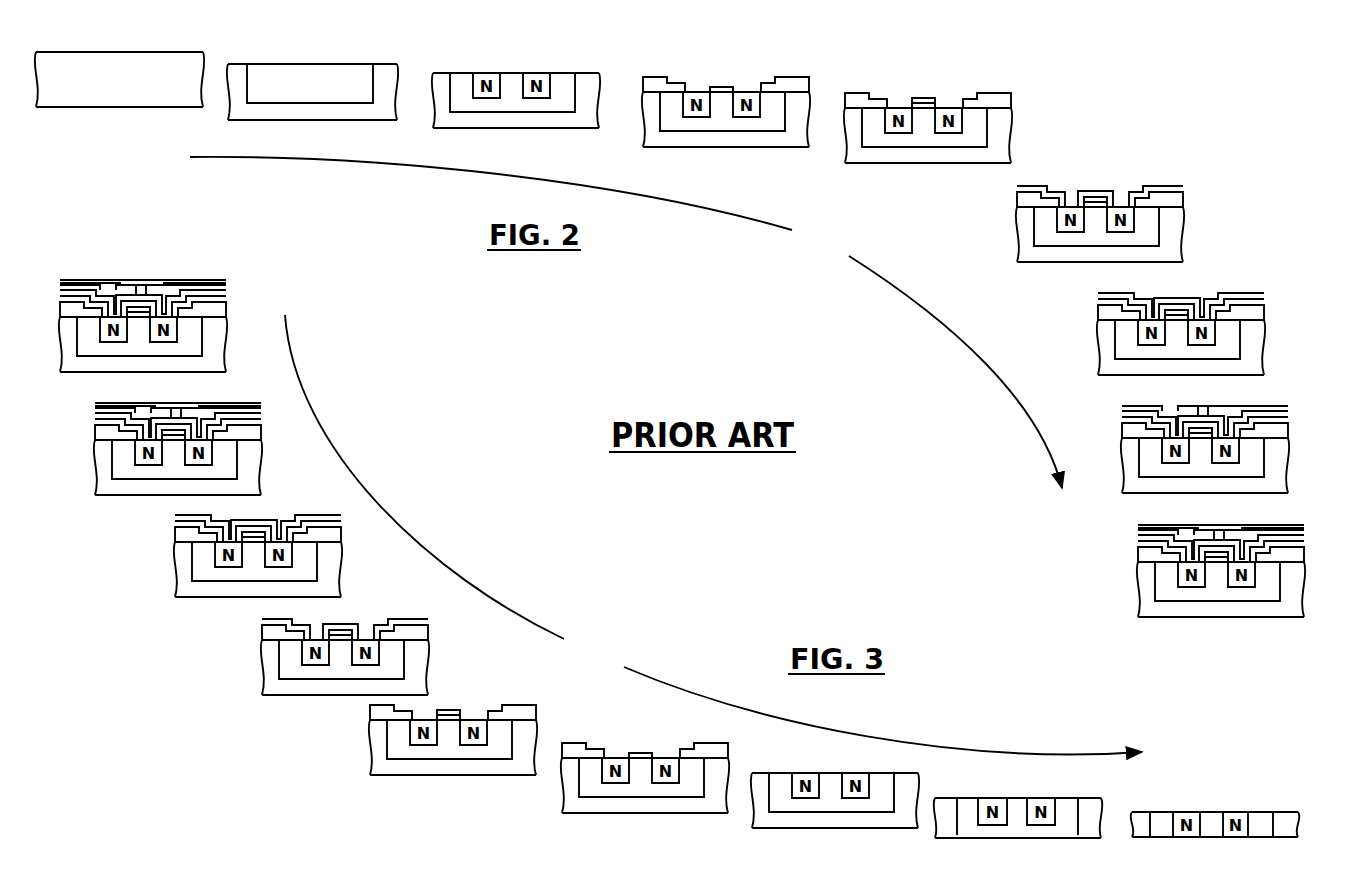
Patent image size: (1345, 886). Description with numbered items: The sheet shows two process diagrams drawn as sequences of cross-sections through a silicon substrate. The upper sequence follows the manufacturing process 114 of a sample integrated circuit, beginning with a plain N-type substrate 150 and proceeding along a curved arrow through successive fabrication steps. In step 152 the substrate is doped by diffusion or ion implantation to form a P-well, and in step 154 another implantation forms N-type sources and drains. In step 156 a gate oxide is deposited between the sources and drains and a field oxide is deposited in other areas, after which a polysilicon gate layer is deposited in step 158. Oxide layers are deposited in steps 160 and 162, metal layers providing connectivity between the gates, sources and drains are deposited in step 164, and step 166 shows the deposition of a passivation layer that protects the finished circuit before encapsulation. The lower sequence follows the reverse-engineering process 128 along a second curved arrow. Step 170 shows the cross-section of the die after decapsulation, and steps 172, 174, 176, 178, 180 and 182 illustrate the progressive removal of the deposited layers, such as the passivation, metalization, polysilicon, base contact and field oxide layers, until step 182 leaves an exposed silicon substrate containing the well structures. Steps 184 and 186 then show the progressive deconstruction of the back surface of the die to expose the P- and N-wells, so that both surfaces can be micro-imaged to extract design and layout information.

In FIG. 2, the manufacturing process 114 is at (987, 343).
In FIG. 3, the reverse-engineering process 128 is at (402, 516).
In FIG. 2, the N-substrate 150 is at (108, 118).
In FIG. 2, the P-well doping step 152 is at (358, 52).
In FIG. 2, the source and drain implantation step 154 is at (556, 56).
In FIG. 2, the oxide deposition step 156 is at (738, 62).
In FIG. 2, the polysilicon gate deposition step 158 is at (961, 86).
In FIG. 2, the first oxide layer deposition step 160 is at (1124, 166).
In FIG. 2, the second oxide layer deposition step 162 is at (1236, 274).
In FIG. 2, the metal layer deposition step 164 is at (1291, 392).
In FIG. 2, the passivation layer deposition step 166 is at (1126, 568).
In FIG. 3, the decapsulated die cross-section step 170 is at (147, 257).
In FIG. 3, the first layer removal step 172 is at (83, 459).
In FIG. 3, the second layer removal step 174 is at (164, 574).
In FIG. 3, the third layer removal step 176 is at (257, 673).
In FIG. 3, the fourth layer removal step 178 is at (362, 756).
In FIG. 3, the fifth layer removal step 180 is at (561, 808).
In FIG. 3, the exposed silicon substrate step 182 is at (789, 833).
In FIG. 3, the back surface deconstruction step 184 is at (967, 848).
In FIG. 3, the final back surface deconstruction step 186 is at (1264, 804).